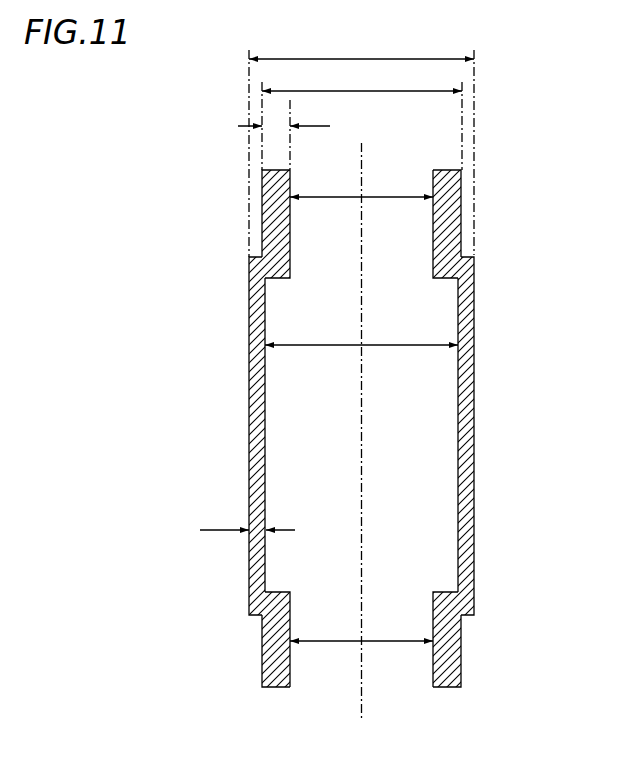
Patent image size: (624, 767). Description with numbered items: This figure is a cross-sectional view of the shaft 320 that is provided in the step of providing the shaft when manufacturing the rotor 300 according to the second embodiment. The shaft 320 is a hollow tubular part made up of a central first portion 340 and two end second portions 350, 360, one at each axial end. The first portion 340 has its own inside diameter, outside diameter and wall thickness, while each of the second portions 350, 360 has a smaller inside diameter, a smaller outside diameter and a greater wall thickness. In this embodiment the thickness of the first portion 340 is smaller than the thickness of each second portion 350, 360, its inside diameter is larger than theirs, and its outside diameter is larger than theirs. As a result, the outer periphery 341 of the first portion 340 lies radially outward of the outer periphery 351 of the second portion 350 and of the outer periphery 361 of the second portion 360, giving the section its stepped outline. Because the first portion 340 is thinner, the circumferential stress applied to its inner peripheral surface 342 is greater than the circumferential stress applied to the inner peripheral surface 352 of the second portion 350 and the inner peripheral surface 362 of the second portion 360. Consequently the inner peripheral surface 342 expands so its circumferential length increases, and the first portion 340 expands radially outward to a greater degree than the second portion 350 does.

The rotor 300 is at (112, 87).
The shaft 320 is at (500, 183).
The first portion 340 is at (335, 436).
The outer periphery of the first portion 341 is at (249, 372).
The inner peripheral surface of the first portion 342 is at (266, 407).
The second portion 350 is at (328, 206).
The outer periphery of the second portion 351 is at (262, 197).
The inner peripheral surface of the second portion 352 is at (290, 248).
The second portion 360 is at (327, 653).
The outer periphery of the second portion 361 is at (262, 661).
The inner peripheral surface of the second portion 362 is at (290, 668).